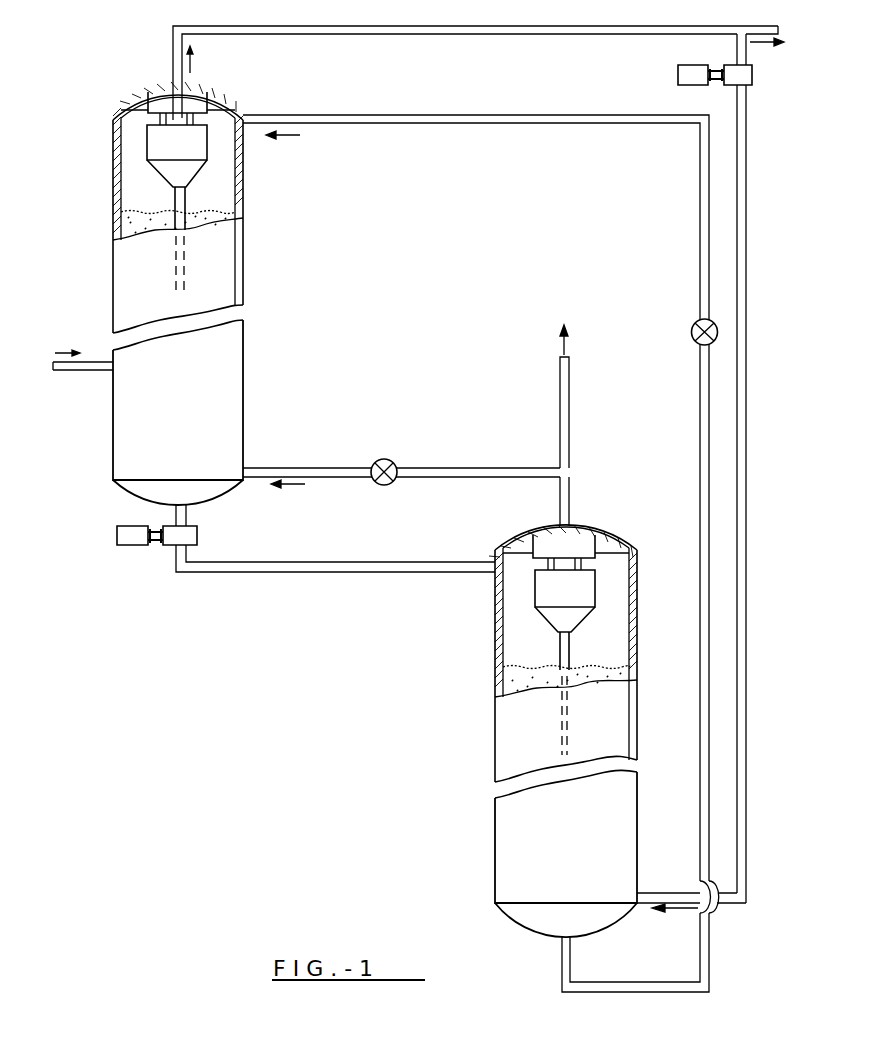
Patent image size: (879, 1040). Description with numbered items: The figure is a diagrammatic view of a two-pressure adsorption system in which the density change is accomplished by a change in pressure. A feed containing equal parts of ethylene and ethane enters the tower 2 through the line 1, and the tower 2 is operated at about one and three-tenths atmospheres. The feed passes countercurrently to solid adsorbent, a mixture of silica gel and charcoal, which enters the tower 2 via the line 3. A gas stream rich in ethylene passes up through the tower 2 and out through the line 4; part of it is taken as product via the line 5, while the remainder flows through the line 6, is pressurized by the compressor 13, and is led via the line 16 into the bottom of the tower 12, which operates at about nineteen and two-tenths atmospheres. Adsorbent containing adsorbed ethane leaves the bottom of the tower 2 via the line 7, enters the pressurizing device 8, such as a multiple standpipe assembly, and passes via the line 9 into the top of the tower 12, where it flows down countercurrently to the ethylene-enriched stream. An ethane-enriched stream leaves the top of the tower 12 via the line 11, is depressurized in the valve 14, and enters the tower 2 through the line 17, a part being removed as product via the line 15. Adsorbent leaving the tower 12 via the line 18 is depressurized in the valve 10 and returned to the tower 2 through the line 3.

The line 1 is at (84, 368).
The tower 2 is at (113, 438).
The line 3 is at (360, 115).
The line 4 is at (366, 26).
The line 5 is at (778, 26).
The line 6 is at (737, 50).
The line 7 is at (190, 510).
The pressurizing device 8 is at (198, 540).
The line 9 is at (362, 563).
The valve 10 is at (690, 331).
The line 11 is at (569, 507).
The tower 12 is at (563, 731).
The compressor 13 is at (752, 75).
The valve 14 is at (394, 462).
The line 15 is at (569, 407).
The line 16 is at (692, 893).
The line 17 is at (330, 468).
The line 18 is at (660, 982).